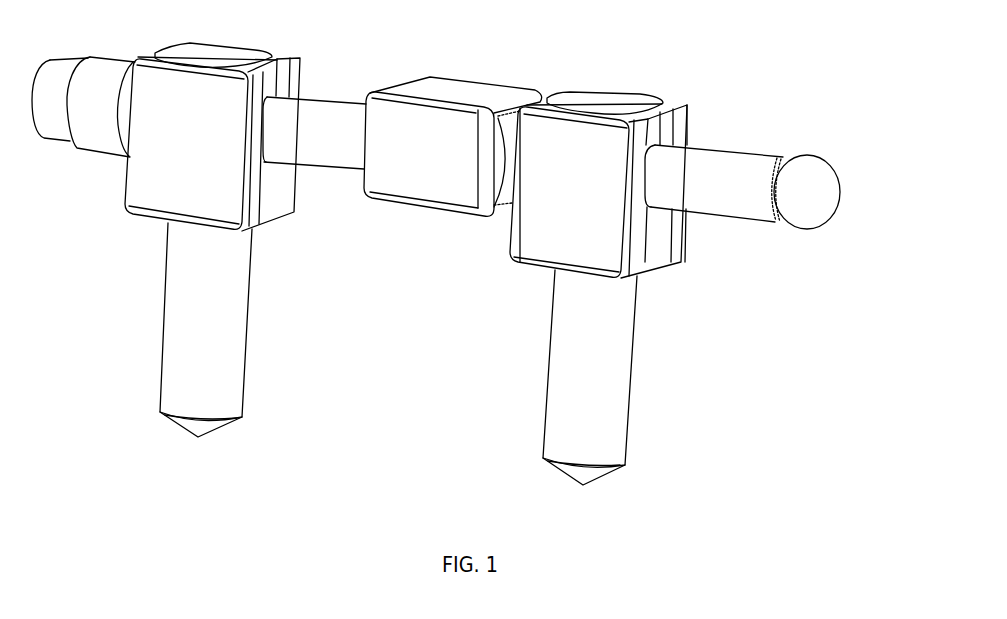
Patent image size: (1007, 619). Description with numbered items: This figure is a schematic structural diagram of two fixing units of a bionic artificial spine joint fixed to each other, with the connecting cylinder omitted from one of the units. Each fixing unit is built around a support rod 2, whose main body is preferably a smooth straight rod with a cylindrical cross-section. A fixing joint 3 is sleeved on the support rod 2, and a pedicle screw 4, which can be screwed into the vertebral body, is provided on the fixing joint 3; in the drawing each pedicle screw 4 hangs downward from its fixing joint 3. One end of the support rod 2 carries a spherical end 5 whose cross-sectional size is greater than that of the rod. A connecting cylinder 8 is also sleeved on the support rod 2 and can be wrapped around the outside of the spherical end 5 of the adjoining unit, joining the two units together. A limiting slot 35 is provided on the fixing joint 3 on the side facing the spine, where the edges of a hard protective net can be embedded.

The support rod 2 is at (725, 186).
The fixing joint 3 is at (577, 199).
The pedicle screw 4 is at (587, 343).
The spherical end 5 is at (806, 193).
The connecting cylinder 8 is at (406, 160).
The limiting slot 35 is at (580, 106).